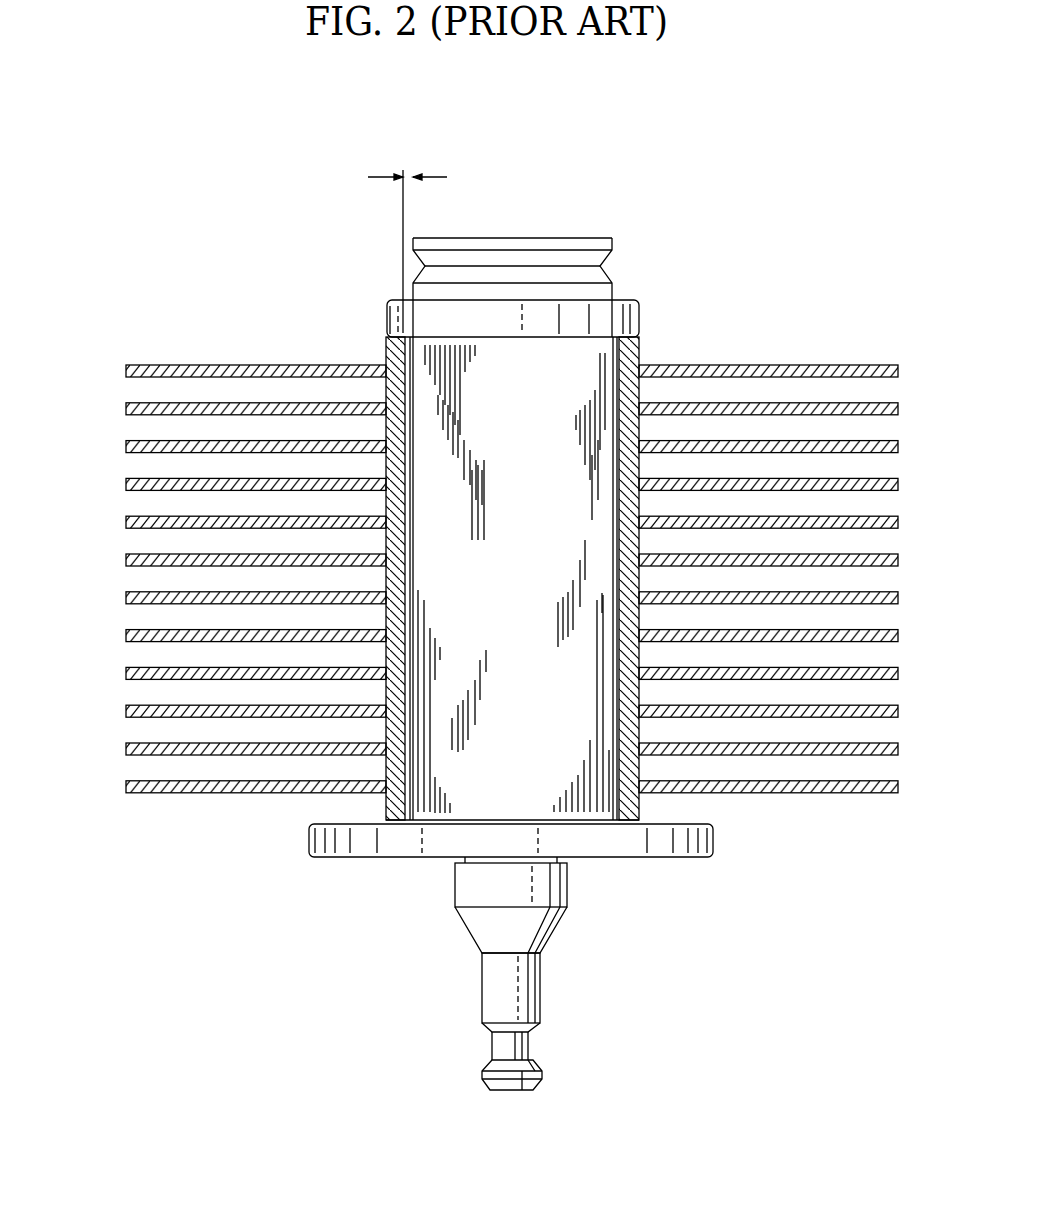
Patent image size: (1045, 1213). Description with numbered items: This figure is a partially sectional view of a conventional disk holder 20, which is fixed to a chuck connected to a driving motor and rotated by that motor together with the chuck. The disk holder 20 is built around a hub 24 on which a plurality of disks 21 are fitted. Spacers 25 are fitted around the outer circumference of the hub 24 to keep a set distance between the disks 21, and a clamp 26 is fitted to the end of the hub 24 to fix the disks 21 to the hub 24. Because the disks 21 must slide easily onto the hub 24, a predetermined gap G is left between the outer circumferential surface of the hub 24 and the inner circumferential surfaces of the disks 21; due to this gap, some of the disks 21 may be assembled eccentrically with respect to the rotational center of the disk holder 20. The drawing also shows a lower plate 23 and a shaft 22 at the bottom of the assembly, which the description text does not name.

The disk holder 20 is at (268, 905).
The disks 21 is at (126, 752).
The shaft / fixing member 22 is at (482, 988).
The base plate 23 is at (708, 840).
The hub 24 is at (530, 588).
The spacers 25 is at (386, 380).
The clamp 26 is at (514, 238).